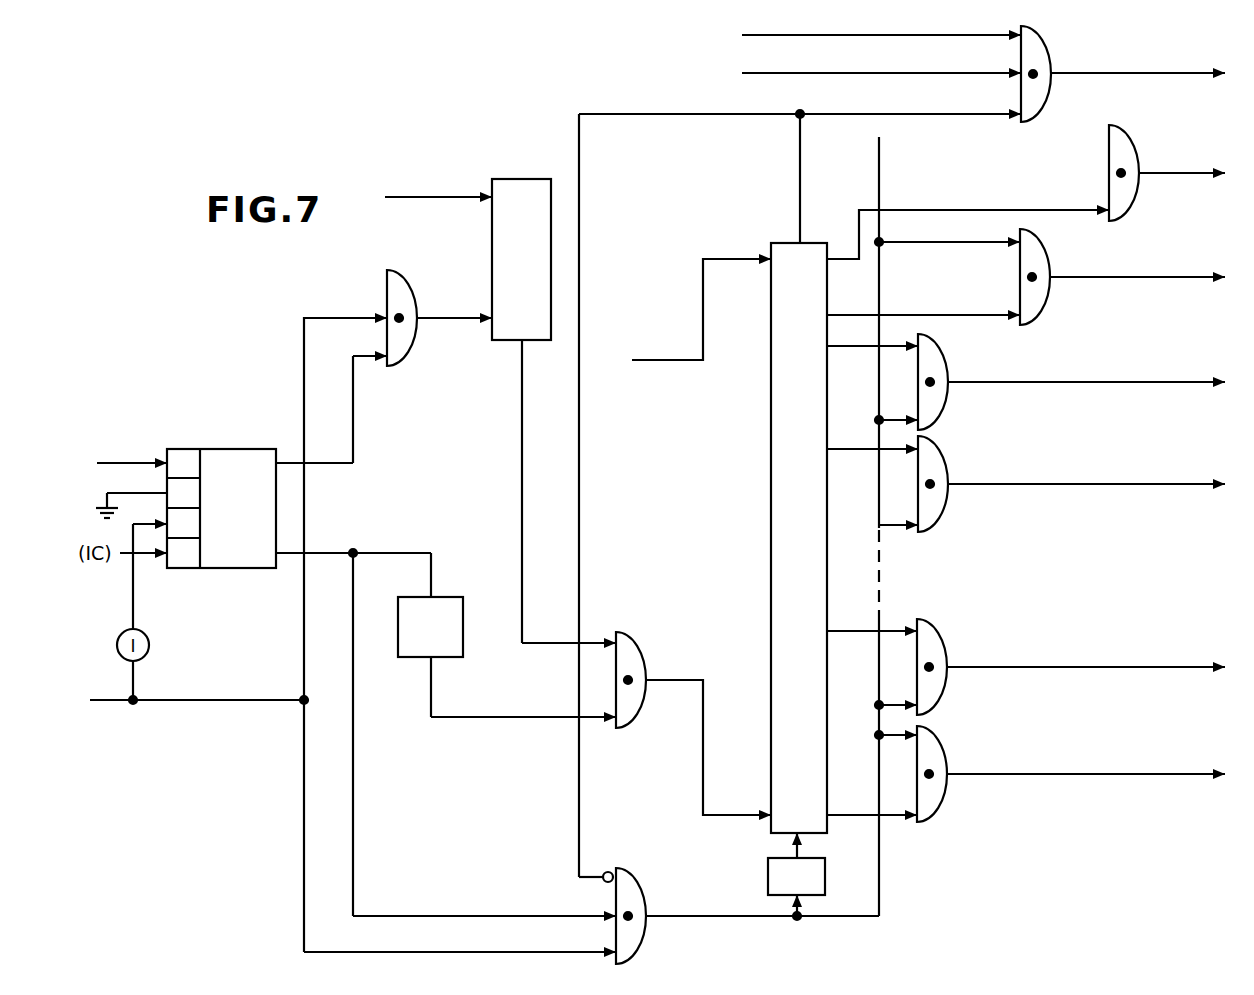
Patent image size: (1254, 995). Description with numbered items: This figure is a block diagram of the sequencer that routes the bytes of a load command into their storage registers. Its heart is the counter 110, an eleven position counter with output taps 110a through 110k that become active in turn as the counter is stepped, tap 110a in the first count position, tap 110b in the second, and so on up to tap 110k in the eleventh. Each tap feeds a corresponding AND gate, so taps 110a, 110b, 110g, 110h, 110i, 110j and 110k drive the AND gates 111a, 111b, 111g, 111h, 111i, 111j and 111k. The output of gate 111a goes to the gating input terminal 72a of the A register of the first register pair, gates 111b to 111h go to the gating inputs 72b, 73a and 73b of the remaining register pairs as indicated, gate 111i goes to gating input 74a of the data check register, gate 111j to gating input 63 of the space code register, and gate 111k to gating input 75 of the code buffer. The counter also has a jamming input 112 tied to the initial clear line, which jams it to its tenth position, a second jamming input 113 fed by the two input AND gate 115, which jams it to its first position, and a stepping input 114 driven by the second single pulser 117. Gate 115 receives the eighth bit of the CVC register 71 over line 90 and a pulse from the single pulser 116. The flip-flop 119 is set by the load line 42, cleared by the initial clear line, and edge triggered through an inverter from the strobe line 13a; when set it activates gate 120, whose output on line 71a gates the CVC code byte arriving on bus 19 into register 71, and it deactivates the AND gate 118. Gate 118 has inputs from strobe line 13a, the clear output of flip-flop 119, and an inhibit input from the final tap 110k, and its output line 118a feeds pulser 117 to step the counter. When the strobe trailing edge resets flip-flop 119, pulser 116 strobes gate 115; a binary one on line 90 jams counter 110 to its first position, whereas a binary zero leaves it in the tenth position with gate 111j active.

The strobe line 13a is at (115, 700).
The load line 42 is at (124, 463).
The bus 19 is at (416, 197).
The CVC register 71 is at (517, 179).
The register input line 71a is at (456, 318).
The gate 120 is at (404, 284).
The flip-flop 119 is at (218, 449).
The line 90 is at (520, 493).
The single pulser 116 is at (446, 658).
The two input AND gate 115 is at (627, 633).
The second jamming input 113 is at (694, 680).
The AND gate 118 is at (636, 854).
The second single pulser 117 is at (768, 866).
The stepping input 114 is at (803, 848).
The jamming input 112 is at (720, 259).
The counter 110 is at (771, 414).
The output tap 110k is at (802, 142).
The output tap 110j is at (948, 210).
The output tap 110i is at (966, 315).
The output tap 110h is at (858, 347).
The output tap 110g is at (858, 450).
The output tap 110b is at (896, 630).
The output tap 110a is at (888, 816).
The gate output line 118a is at (885, 904).
The AND gate 111k is at (1045, 58).
The AND gate 111j is at (1119, 132).
The AND gate 111i is at (1044, 300).
The AND gate 111h is at (948, 400).
The AND gate 111g is at (940, 510).
The AND gate 111b is at (942, 636).
The AND gate 111a is at (944, 762).
The gating input 75 is at (1150, 72).
The gating input 63 is at (1198, 173).
The gating input 74a is at (1184, 277).
The output line 73b is at (1144, 383).
The output line 73a is at (1110, 485).
The output line 72b is at (1116, 667).
The gating input terminal 72a is at (1122, 774).